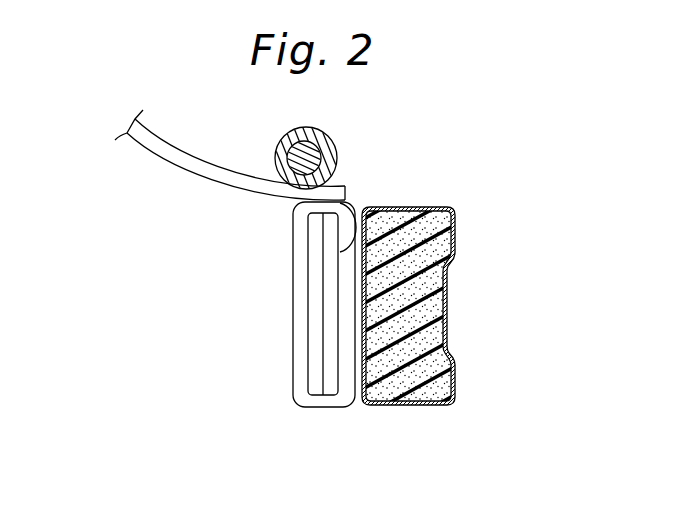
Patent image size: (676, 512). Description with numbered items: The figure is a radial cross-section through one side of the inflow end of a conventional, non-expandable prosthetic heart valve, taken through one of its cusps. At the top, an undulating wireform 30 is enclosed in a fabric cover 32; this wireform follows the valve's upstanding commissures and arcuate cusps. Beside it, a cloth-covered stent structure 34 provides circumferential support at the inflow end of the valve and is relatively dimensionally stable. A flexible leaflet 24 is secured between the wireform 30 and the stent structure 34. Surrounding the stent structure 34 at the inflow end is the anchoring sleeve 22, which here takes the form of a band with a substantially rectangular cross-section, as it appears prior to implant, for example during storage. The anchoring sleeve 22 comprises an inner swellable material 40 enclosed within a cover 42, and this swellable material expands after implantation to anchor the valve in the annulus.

The anchoring sleeve 22 is at (458, 324).
The flexible leaflet 24 is at (160, 165).
The undulating wireform 30 is at (350, 139).
The fabric cover 32 is at (335, 163).
The cloth-covered stent structure 34 is at (289, 327).
The inner swellable material 40 is at (447, 318).
The cover 42 is at (457, 238).